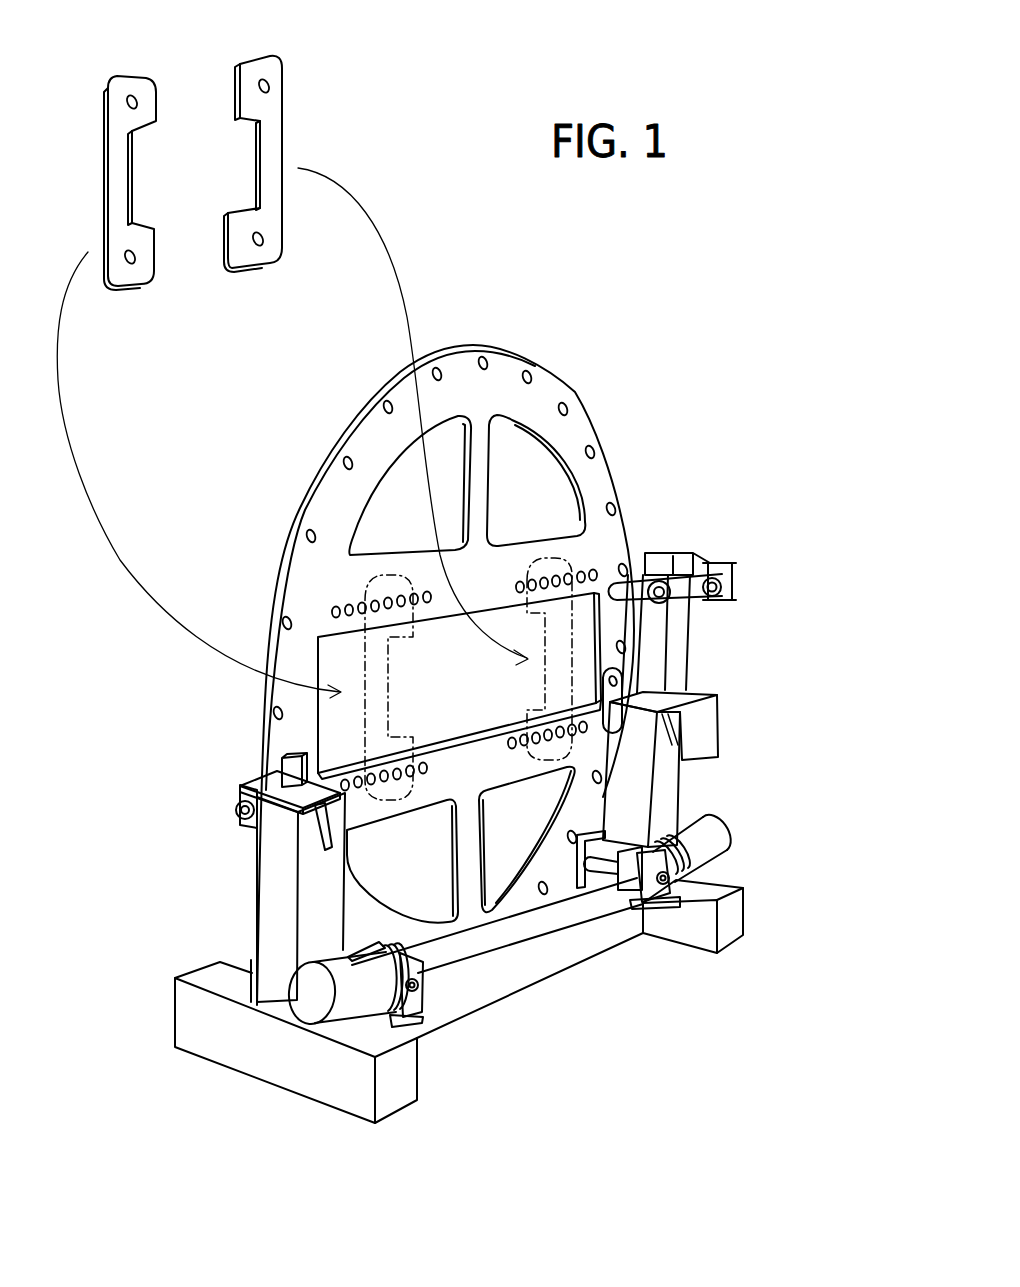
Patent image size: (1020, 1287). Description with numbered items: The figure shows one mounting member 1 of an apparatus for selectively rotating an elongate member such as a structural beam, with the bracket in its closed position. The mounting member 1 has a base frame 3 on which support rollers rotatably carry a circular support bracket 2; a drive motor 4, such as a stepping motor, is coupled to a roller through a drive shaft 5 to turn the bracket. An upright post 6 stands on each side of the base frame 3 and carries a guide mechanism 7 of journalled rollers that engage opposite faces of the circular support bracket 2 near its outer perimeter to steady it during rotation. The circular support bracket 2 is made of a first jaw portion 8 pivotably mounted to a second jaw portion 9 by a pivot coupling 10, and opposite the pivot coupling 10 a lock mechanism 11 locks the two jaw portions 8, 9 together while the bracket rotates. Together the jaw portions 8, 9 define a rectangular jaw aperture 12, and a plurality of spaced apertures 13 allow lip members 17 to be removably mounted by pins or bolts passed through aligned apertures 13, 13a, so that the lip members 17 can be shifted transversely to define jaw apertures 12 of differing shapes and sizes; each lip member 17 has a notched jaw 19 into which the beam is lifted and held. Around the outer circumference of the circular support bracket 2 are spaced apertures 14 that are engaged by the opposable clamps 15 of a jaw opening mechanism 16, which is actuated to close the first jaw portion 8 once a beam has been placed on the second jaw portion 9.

The mounting member 1 is at (501, 726).
The circular support bracket 2 is at (587, 417).
The base frame 3 is at (547, 957).
The drive motor 4 is at (308, 995).
The drive shaft 5 is at (592, 870).
The upright post 6 is at (668, 798).
The guide mechanism 7 is at (240, 812).
The first jaw portion 8 is at (330, 487).
The second jaw portion 9 is at (461, 778).
The pivot coupling 10 is at (622, 695).
The lock mechanism 11 is at (283, 773).
The rectangular jaw aperture 12 is at (479, 687).
The spaced apertures 13 is at (335, 609).
The mounting apertures 13a is at (269, 87).
The spaced apertures 14 is at (615, 507).
The opposable clamps 15 is at (684, 591).
The jaw opening mechanism 16 is at (720, 562).
The lip member 17 is at (270, 147).
The notched jaw 19 is at (244, 174).